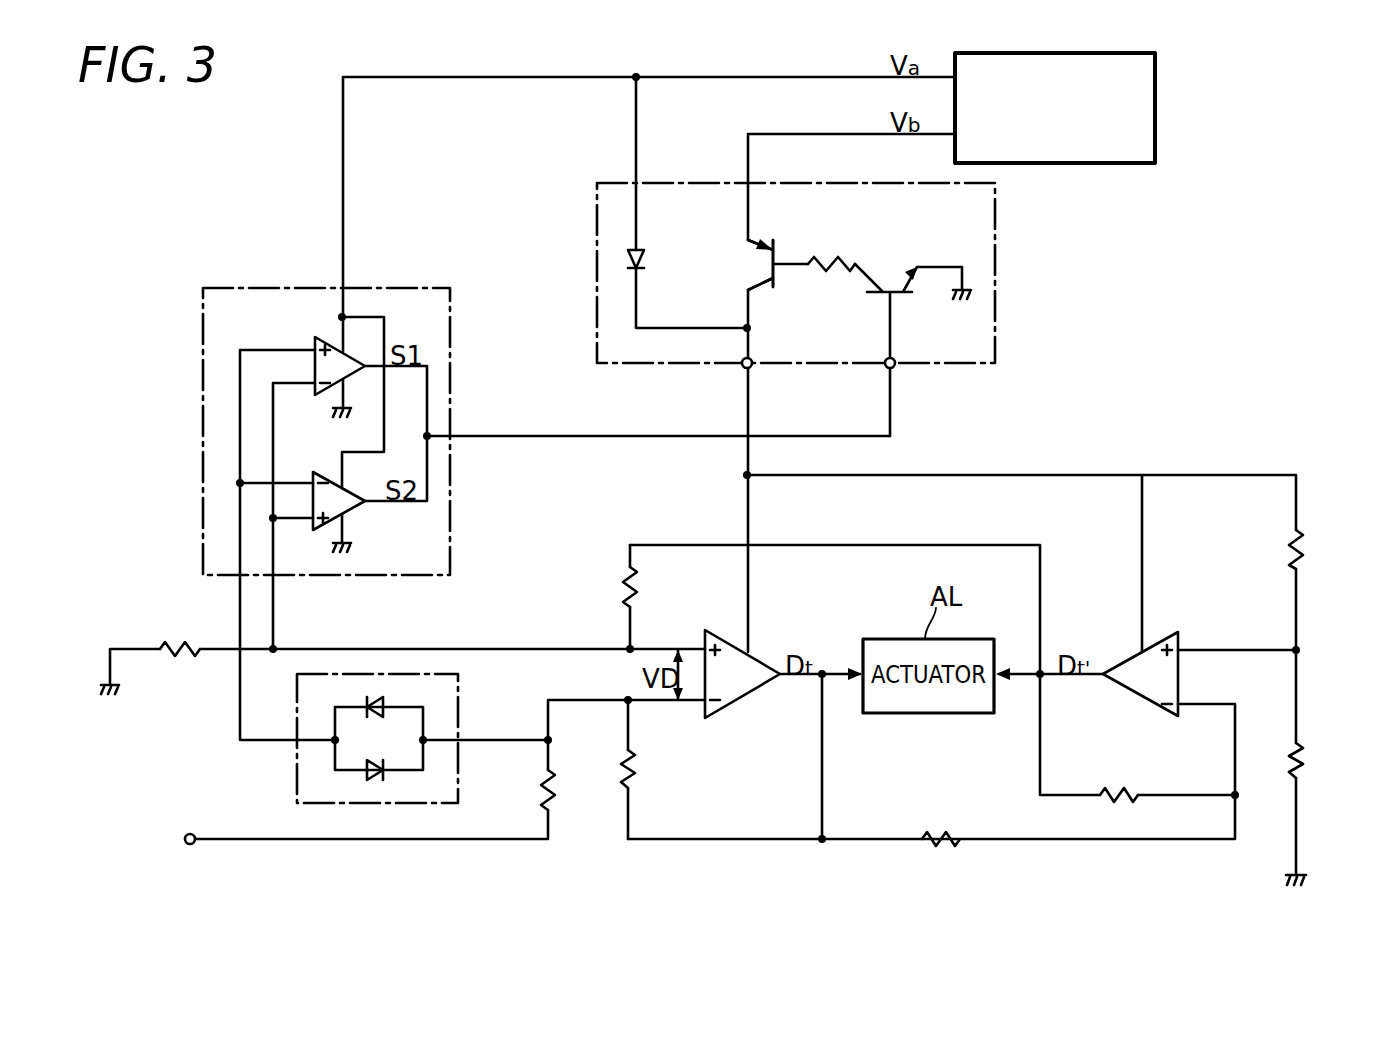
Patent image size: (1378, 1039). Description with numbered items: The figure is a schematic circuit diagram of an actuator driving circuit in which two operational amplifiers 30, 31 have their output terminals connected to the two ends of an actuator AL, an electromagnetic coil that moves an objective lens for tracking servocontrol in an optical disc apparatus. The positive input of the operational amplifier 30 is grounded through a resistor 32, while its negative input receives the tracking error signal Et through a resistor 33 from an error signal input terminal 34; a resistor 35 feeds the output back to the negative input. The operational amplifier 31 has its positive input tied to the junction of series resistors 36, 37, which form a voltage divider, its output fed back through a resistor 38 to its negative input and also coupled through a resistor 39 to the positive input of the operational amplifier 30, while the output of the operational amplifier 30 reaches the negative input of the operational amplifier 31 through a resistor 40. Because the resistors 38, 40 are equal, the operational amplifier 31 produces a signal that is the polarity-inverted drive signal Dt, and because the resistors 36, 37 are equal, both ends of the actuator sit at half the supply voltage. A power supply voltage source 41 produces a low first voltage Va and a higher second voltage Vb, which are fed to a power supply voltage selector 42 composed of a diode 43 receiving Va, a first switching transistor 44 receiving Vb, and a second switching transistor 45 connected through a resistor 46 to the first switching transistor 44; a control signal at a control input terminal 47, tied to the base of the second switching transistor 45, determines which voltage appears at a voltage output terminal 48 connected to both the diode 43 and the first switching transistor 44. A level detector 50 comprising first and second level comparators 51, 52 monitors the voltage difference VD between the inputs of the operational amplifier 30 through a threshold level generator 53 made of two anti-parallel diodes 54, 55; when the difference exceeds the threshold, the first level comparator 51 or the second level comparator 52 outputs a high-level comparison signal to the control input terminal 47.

The operational amplifier 30 is at (752, 697).
The operational amplifier 31 is at (1128, 697).
The resistor 32 is at (178, 640).
The resistor 33 is at (552, 792).
The error signal input terminal 34 is at (192, 832).
The resistor 35 is at (620, 762).
The resistor 36 is at (1300, 548).
The resistor 37 is at (1302, 772).
The resistor 38 is at (1115, 792).
The resistor 39 is at (625, 582).
The resistor 40 is at (952, 836).
The power supply voltage source 41 is at (1073, 165).
The power supply voltage selector 42 is at (996, 242).
The diode 43 is at (644, 263).
The first switching transistor 44 is at (777, 252).
The second switching transistor 45 is at (898, 294).
The resistor 46 is at (822, 272).
The control input terminal 47 is at (895, 368).
The voltage output terminal 48 is at (744, 370).
The level detector 50 is at (235, 288).
The first level comparator 51 is at (315, 342).
The second level comparator 52 is at (322, 472).
The threshold level generator 53 is at (458, 692).
The diode 54 is at (388, 775).
The diode 55 is at (365, 703).